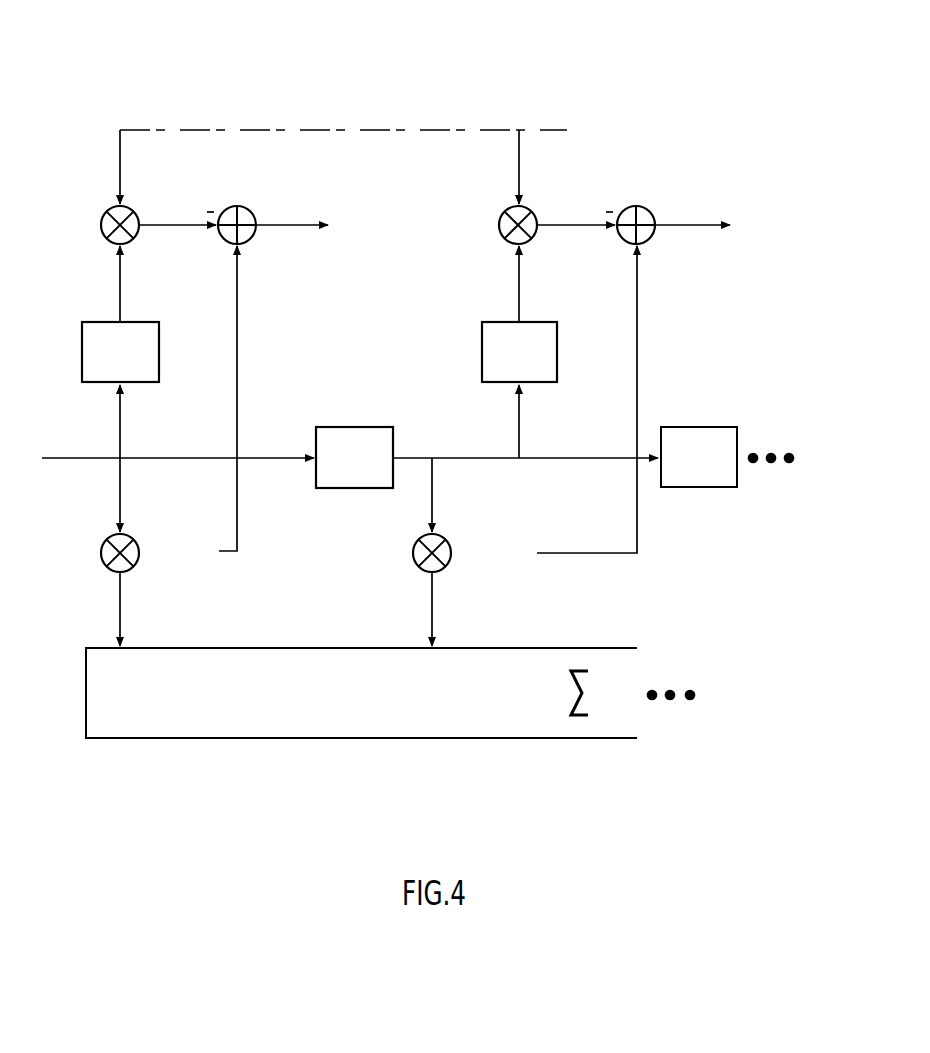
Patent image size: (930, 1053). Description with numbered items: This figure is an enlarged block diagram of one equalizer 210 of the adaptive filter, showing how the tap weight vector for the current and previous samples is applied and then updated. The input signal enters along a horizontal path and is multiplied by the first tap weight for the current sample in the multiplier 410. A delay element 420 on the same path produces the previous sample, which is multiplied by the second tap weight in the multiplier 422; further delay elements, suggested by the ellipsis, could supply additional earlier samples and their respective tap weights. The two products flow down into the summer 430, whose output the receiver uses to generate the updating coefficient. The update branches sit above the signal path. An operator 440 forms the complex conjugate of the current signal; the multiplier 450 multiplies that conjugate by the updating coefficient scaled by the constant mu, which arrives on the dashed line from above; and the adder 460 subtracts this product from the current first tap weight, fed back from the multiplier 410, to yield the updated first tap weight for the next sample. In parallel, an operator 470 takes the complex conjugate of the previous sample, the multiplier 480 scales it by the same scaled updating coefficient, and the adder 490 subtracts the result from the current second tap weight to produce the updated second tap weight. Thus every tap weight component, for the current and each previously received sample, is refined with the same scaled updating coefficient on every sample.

The equalizer 210 is at (114, 60).
The multiplier 410 is at (102, 548).
The delay element 420 is at (315, 445).
The multiplier 422 is at (413, 547).
The summer 430 is at (266, 740).
The operator 440 is at (82, 337).
The multiplier 450 is at (102, 220).
The adder 460 is at (247, 208).
The operator 470 is at (482, 337).
The multiplier 480 is at (501, 220).
The adder 490 is at (647, 208).